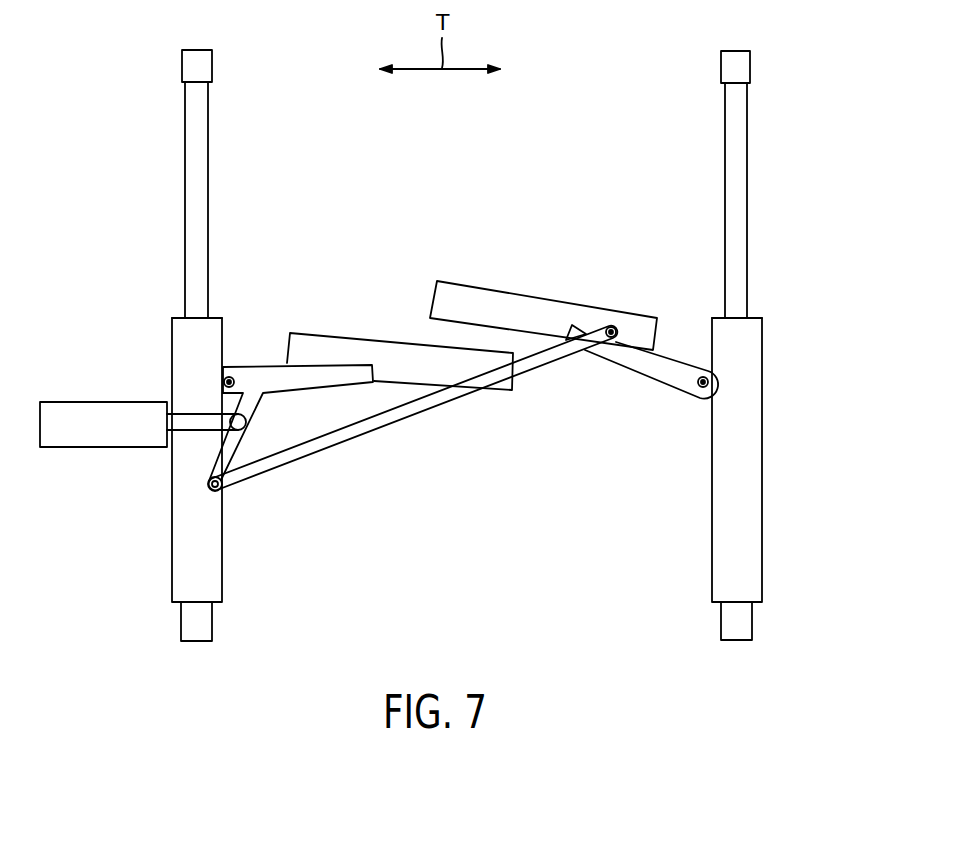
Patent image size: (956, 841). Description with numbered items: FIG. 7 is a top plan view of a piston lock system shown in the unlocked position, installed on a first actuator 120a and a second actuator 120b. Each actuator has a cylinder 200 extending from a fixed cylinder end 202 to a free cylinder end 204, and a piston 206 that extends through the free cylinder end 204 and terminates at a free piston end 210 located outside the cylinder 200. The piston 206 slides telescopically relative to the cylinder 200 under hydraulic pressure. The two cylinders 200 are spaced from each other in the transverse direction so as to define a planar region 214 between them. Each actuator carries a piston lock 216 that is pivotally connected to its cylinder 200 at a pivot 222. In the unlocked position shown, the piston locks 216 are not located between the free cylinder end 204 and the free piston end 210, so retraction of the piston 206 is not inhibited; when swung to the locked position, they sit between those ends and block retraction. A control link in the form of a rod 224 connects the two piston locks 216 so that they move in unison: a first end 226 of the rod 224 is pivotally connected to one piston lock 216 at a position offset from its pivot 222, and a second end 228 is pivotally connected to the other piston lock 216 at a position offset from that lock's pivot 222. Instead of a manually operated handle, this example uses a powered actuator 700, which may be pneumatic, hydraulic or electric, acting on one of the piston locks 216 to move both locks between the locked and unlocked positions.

The free piston end 210 is at (212, 67).
The piston 206 is at (208, 170).
The first actuator 120a is at (164, 191).
The second actuator 120b is at (702, 191).
The cylinder 200 is at (172, 470).
The free cylinder end 204 is at (178, 318).
The fixed cylinder end 202 is at (181, 621).
The powered actuator 700 is at (102, 418).
The pivot 222 is at (229, 376).
The first end of the rod 226 is at (221, 490).
The rod 224 is at (346, 440).
The second end of the rod 228 is at (548, 364).
The piston lock 216 is at (402, 333).
The planar region 214 is at (497, 492).